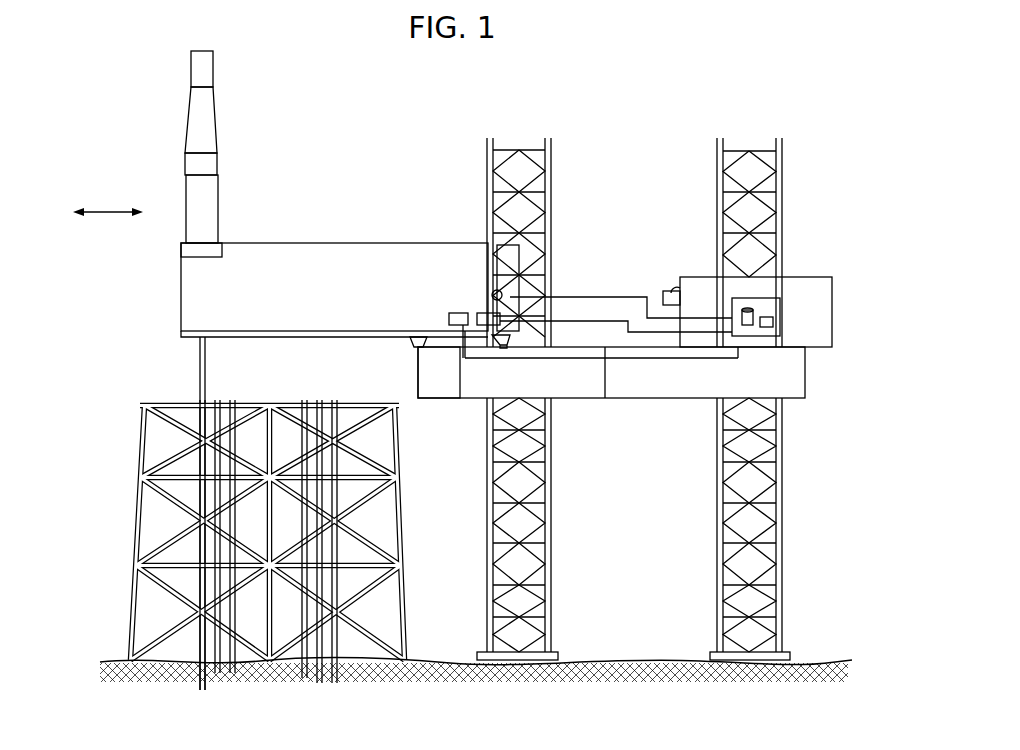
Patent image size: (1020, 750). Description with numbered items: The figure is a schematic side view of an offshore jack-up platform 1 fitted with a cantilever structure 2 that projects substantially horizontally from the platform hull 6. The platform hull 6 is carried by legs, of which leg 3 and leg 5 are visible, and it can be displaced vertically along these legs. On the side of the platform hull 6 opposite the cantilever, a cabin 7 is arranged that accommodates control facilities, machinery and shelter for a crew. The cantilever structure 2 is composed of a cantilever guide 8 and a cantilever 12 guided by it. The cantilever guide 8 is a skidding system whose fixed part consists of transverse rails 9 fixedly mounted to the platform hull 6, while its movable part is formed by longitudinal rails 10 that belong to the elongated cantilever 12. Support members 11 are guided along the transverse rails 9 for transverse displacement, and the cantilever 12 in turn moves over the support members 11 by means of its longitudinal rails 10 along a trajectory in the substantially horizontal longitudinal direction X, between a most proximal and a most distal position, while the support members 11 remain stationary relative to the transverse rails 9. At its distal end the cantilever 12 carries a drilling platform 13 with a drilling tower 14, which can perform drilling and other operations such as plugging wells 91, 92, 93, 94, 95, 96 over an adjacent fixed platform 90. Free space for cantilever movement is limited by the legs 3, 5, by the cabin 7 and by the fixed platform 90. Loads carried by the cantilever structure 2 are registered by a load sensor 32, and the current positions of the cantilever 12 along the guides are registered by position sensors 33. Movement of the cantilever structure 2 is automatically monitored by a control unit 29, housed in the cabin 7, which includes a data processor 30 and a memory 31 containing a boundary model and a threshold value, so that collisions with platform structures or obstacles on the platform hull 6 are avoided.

The jack-up platform 1 is at (810, 146).
The cantilever structure 2 is at (362, 181).
The leg 3 is at (551, 152).
The leg 5 is at (782, 185).
The platform hull 6 is at (634, 406).
The cabin 7 is at (805, 332).
The cantilever guide 8 is at (398, 345).
The transverse rails 9 is at (412, 343).
The longitudinal rails 10 is at (290, 337).
The support members 11 is at (493, 340).
The cantilever 12 is at (313, 241).
The drilling platform 13 is at (181, 250).
The drilling tower 14 is at (213, 190).
The control unit 29 is at (775, 304).
The data processor 30 is at (766, 328).
The memory 31 is at (748, 327).
The load sensor 32 is at (500, 315).
The position sensors 33 is at (460, 313).
The fixed platform 90 is at (129, 446).
The well 91 is at (203, 582).
The well 92 is at (217, 647).
The well 93 is at (233, 620).
The well 94 is at (303, 625).
The well 95 is at (317, 587).
The well 96 is at (337, 645).
The longitudinal direction X is at (110, 207).